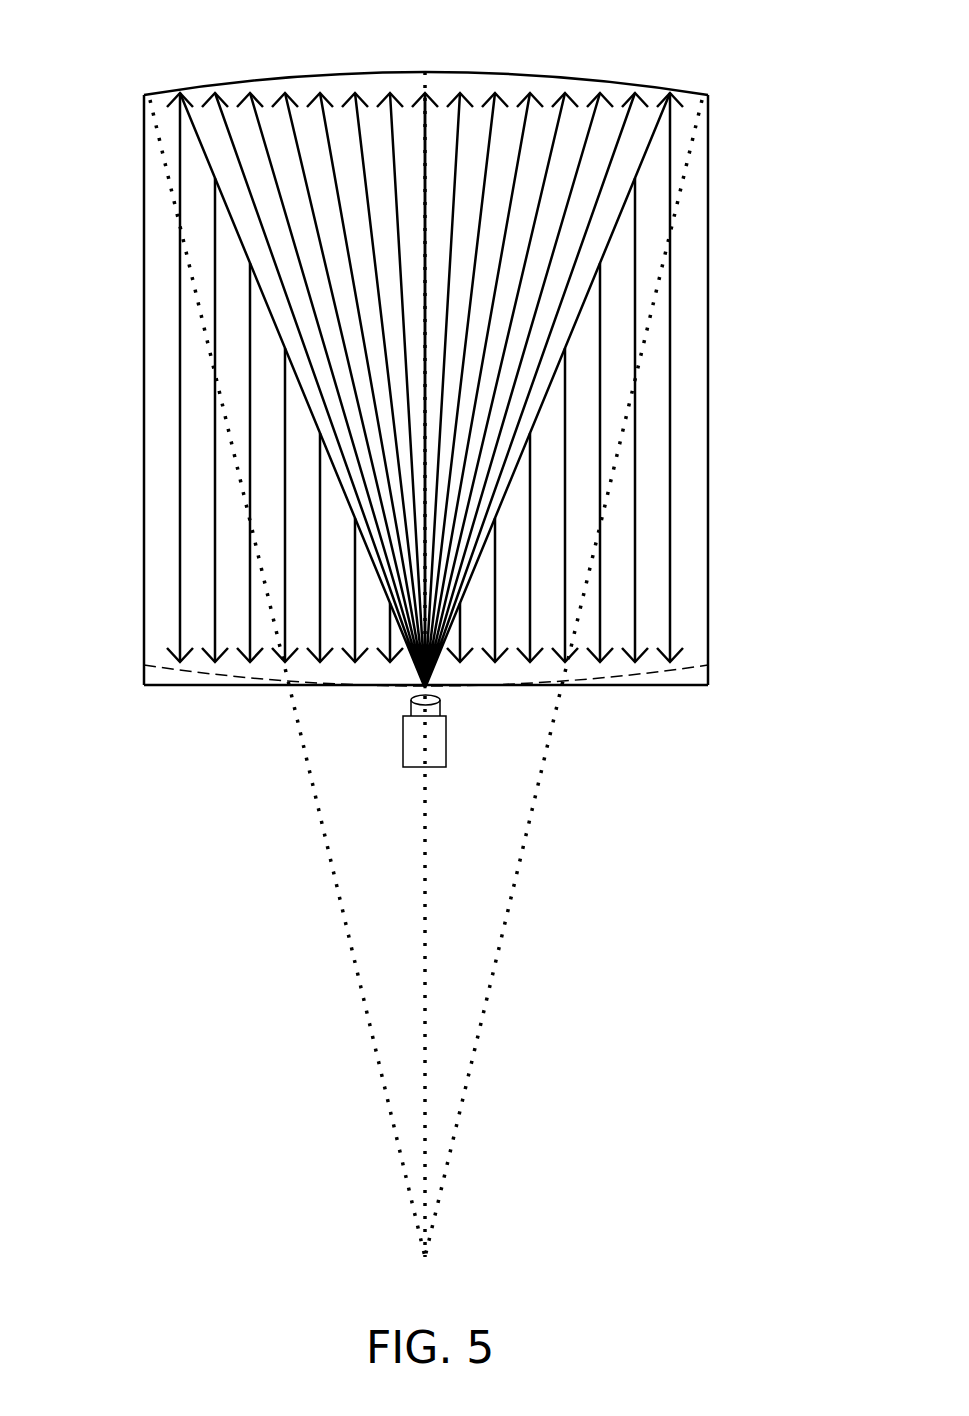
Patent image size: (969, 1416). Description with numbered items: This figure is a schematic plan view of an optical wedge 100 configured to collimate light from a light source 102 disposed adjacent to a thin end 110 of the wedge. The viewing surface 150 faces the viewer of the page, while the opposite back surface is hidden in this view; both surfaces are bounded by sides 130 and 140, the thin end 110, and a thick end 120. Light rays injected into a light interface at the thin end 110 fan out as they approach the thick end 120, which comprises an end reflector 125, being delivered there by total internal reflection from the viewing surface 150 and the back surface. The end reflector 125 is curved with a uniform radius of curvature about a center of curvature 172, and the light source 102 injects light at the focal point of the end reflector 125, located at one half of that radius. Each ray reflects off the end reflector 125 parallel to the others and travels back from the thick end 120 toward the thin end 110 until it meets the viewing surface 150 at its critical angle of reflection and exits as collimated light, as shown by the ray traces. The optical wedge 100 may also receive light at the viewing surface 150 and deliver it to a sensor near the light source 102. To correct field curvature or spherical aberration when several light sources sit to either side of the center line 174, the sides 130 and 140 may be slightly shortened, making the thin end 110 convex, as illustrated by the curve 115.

The optical wedge 100 is at (745, 80).
The light source 102 is at (437, 745).
The thin end 110 is at (590, 688).
The curve 115 is at (682, 668).
The thick end 120 is at (462, 54).
The end reflector 125 is at (538, 73).
The side 130 is at (709, 305).
The side 140 is at (143, 280).
The viewing surface 150 is at (690, 498).
The center of curvature 172 is at (425, 1259).
The center line 174 is at (428, 947).